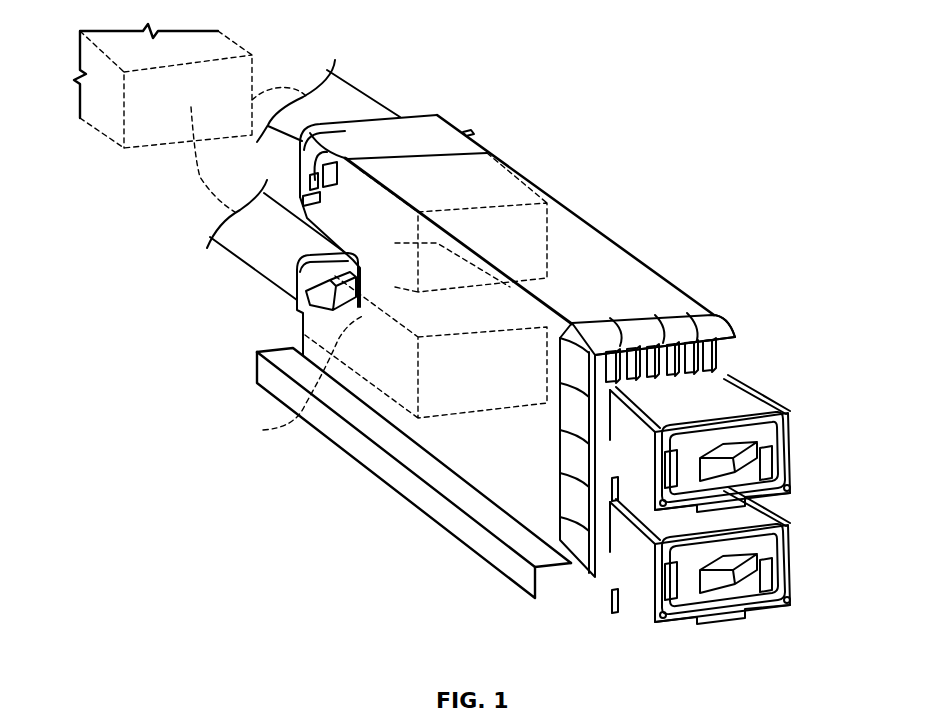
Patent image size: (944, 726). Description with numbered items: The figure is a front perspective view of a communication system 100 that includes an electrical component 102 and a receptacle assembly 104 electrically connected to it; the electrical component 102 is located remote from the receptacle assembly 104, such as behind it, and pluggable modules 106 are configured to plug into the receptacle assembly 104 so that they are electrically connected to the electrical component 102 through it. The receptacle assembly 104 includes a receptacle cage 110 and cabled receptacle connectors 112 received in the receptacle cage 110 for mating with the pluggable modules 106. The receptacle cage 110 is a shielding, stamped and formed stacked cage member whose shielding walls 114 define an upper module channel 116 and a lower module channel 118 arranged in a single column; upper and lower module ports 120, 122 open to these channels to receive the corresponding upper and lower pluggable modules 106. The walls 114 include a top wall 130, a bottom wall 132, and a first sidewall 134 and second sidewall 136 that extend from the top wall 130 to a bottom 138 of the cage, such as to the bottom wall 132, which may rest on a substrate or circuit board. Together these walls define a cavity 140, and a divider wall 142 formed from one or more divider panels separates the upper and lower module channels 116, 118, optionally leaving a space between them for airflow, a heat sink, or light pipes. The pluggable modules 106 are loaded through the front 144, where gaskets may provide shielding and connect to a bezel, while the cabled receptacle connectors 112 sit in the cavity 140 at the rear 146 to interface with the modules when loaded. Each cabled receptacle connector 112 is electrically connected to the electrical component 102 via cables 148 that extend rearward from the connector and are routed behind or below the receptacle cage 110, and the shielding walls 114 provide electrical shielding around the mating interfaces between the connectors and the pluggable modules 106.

The communication system 100 is at (623, 111).
The electrical component 102 is at (100, 125).
The receptacle assembly 104 is at (509, 266).
The pluggable module 106 is at (790, 455).
The receptacle cage 110 is at (414, 473).
The cabled receptacle connector 112 is at (440, 140).
The shielding walls 114 is at (567, 233).
The upper module channel 116 is at (724, 348).
The lower module channel 118 is at (603, 532).
The upper module port 120 is at (595, 517).
The lower module port 122 is at (603, 450).
The top wall 130 is at (610, 273).
The bottom wall 132 is at (510, 505).
The first sidewall 134 is at (508, 480).
The second sidewall 136 is at (747, 367).
The bottom 138 is at (437, 462).
The cavity 140 is at (738, 338).
The divider wall 142 is at (291, 380).
The front 144 is at (670, 341).
The rear 146 is at (413, 113).
The cables 148 is at (347, 87).